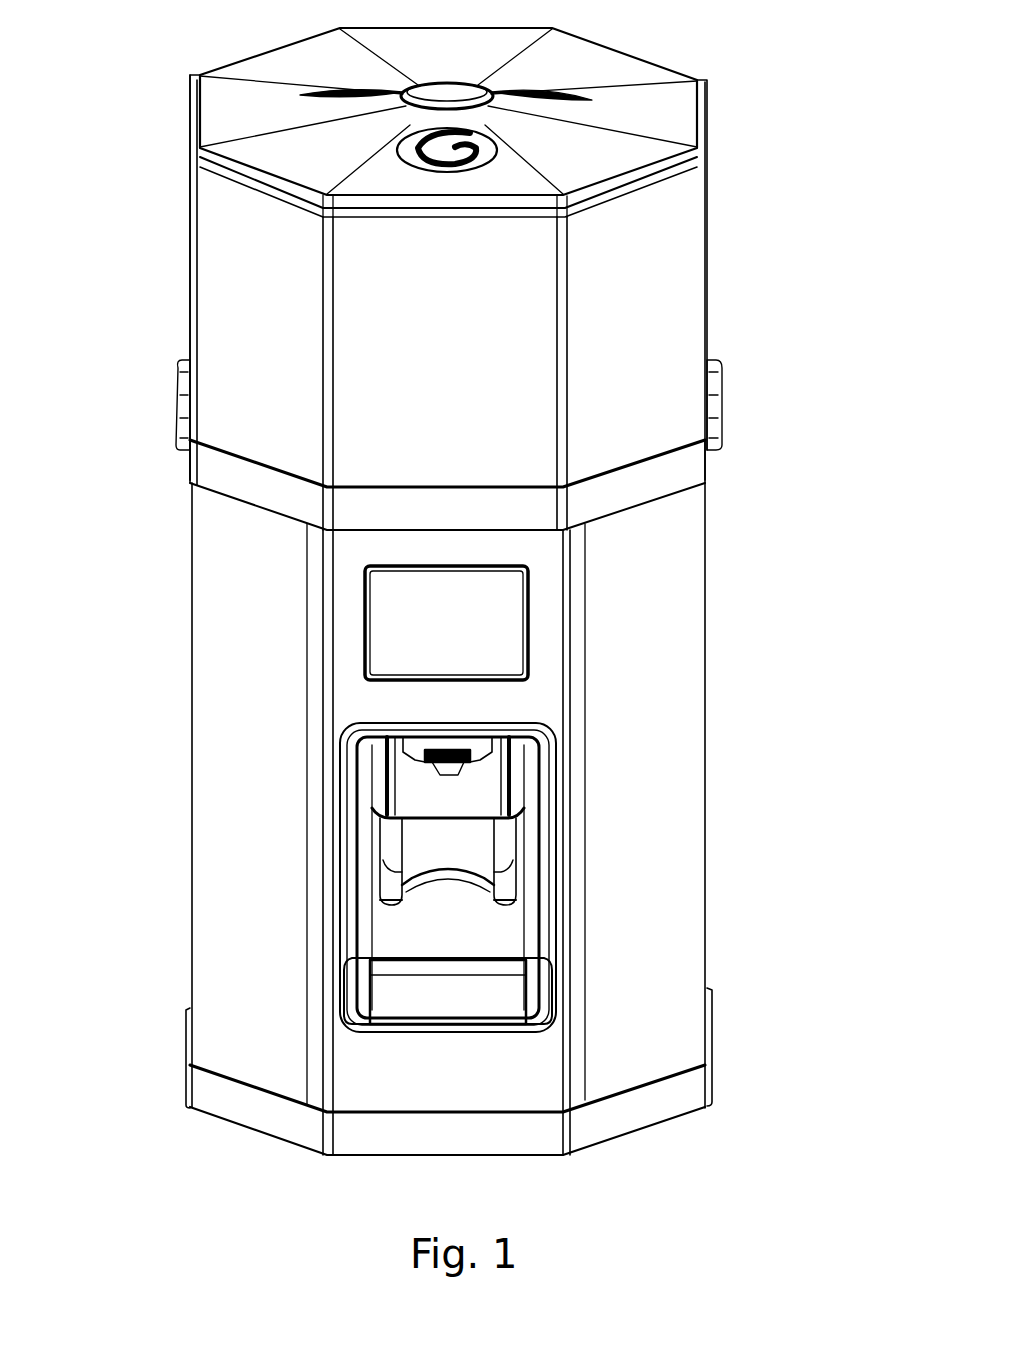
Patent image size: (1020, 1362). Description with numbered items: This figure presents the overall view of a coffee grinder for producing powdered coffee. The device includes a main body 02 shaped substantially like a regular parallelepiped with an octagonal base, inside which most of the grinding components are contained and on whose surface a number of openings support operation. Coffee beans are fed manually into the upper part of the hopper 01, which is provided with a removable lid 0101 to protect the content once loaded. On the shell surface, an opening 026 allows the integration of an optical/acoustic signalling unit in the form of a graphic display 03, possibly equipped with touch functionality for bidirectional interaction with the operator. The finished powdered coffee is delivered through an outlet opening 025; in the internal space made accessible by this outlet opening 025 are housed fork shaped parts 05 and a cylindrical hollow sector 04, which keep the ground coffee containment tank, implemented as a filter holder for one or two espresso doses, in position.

The removable lid 0101 is at (650, 120).
The hopper 01 is at (652, 330).
The main body 02 is at (258, 692).
The graphic display 03 is at (442, 618).
The opening 026 is at (528, 617).
The cylindrical hollow sector 04 is at (453, 742).
The fork shaped parts 05 is at (508, 870).
The outlet opening 025 is at (345, 930).